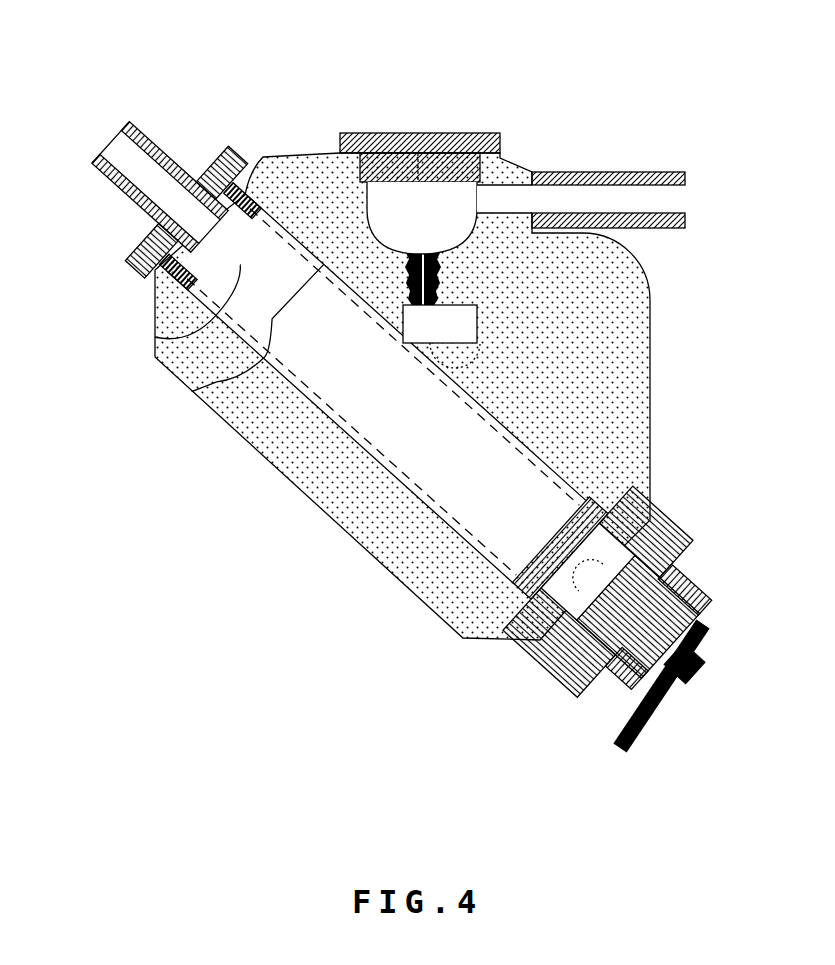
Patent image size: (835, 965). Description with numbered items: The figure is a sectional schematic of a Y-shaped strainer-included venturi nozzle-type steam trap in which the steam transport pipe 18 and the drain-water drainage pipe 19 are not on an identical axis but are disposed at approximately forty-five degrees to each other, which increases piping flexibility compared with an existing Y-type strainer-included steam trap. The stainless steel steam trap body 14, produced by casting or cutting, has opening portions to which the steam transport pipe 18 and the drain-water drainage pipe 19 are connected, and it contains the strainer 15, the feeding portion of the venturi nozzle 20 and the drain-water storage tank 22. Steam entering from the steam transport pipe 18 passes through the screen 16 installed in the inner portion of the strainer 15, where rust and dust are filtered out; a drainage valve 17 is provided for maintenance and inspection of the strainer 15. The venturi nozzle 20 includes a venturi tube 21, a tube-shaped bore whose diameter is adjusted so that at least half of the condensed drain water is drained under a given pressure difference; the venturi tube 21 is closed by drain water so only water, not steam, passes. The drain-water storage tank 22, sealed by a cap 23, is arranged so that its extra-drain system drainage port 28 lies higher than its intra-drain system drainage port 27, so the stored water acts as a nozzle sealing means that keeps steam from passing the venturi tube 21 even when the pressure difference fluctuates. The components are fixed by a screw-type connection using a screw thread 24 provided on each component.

The steam trap body 14 is at (226, 442).
The strainer 15 is at (376, 474).
The screen 16 is at (455, 534).
The drainage valve 17 is at (572, 695).
The steam transport pipe 18 is at (141, 120).
The drain-water drainage pipe 19 is at (622, 165).
The venturi nozzle 20 is at (191, 392).
The venturi tube 21 is at (478, 344).
The drain-water storage tank 22 is at (155, 337).
The cap 23 is at (419, 124).
The screw thread 24 is at (495, 170).
The intra-drain system drainage port 27 is at (367, 155).
The extra-drain system drainage port 28 is at (500, 187).